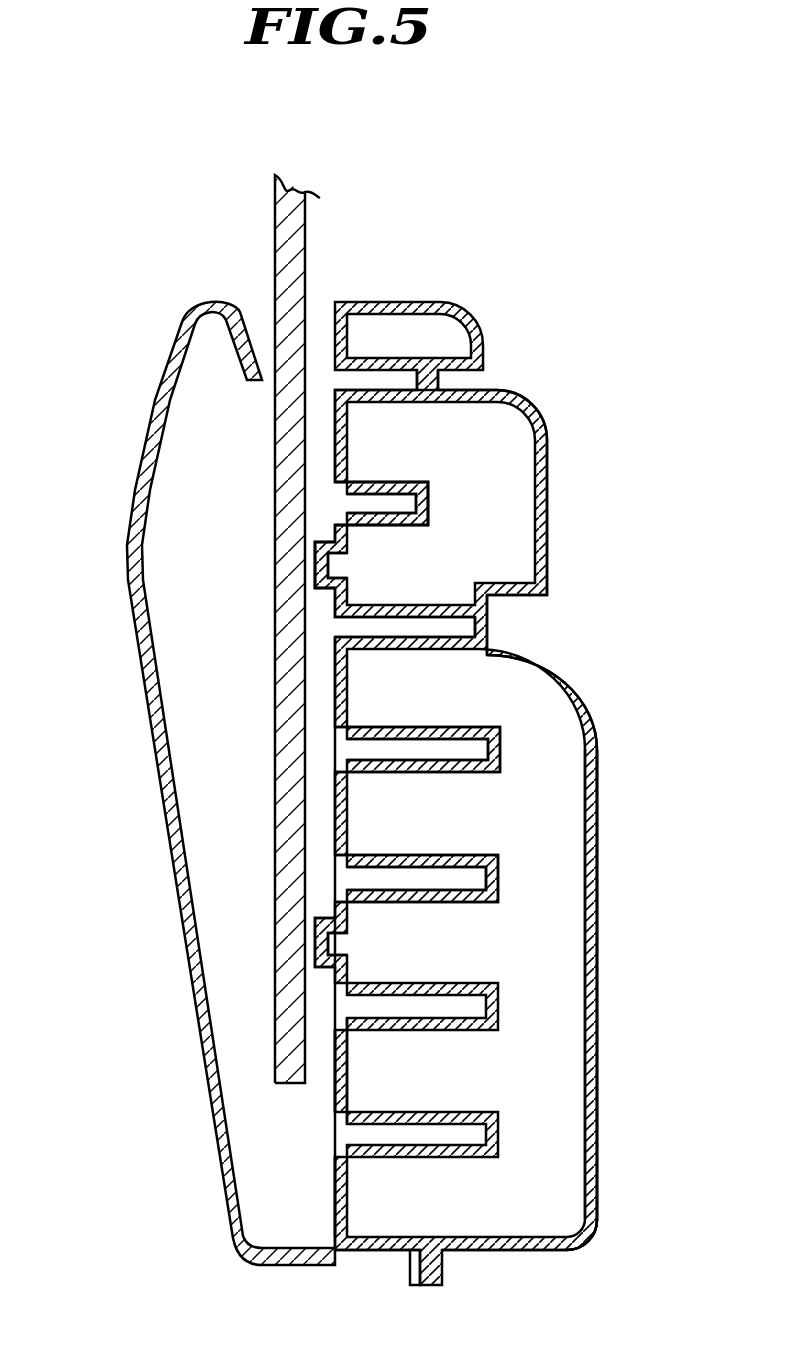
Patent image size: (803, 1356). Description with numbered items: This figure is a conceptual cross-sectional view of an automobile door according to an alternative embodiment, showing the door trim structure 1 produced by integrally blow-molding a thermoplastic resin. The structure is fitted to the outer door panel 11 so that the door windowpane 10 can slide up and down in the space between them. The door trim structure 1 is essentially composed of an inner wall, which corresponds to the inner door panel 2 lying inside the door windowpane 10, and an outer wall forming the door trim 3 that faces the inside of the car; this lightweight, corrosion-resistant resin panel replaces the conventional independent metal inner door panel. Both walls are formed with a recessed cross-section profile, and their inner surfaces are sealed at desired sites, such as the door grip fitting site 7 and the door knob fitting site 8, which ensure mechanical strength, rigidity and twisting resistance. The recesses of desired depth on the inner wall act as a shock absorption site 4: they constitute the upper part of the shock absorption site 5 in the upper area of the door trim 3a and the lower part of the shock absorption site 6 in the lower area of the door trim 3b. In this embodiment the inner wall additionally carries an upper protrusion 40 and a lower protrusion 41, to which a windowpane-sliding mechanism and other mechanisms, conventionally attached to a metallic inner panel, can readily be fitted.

The door trim structure for automobiles 1 is at (480, 300).
The inner door panel 2 is at (336, 1100).
The door trim 3 is at (600, 684).
The upper area of door trim 3a is at (548, 451).
The lower area of door trim 3b is at (598, 1130).
The shock absorption site 4 is at (500, 826).
The upper part of shock absorption site 5 is at (430, 501).
The lower part of shock absorption site 6 is at (499, 888).
The door grip fitting site 7 is at (489, 626).
The door knob fitting site 8 is at (442, 374).
The door windowpane 10 is at (306, 231).
The outer door panel 11 is at (145, 460).
The upper protrusion 40 is at (317, 562).
The lower protrusion 41 is at (317, 942).